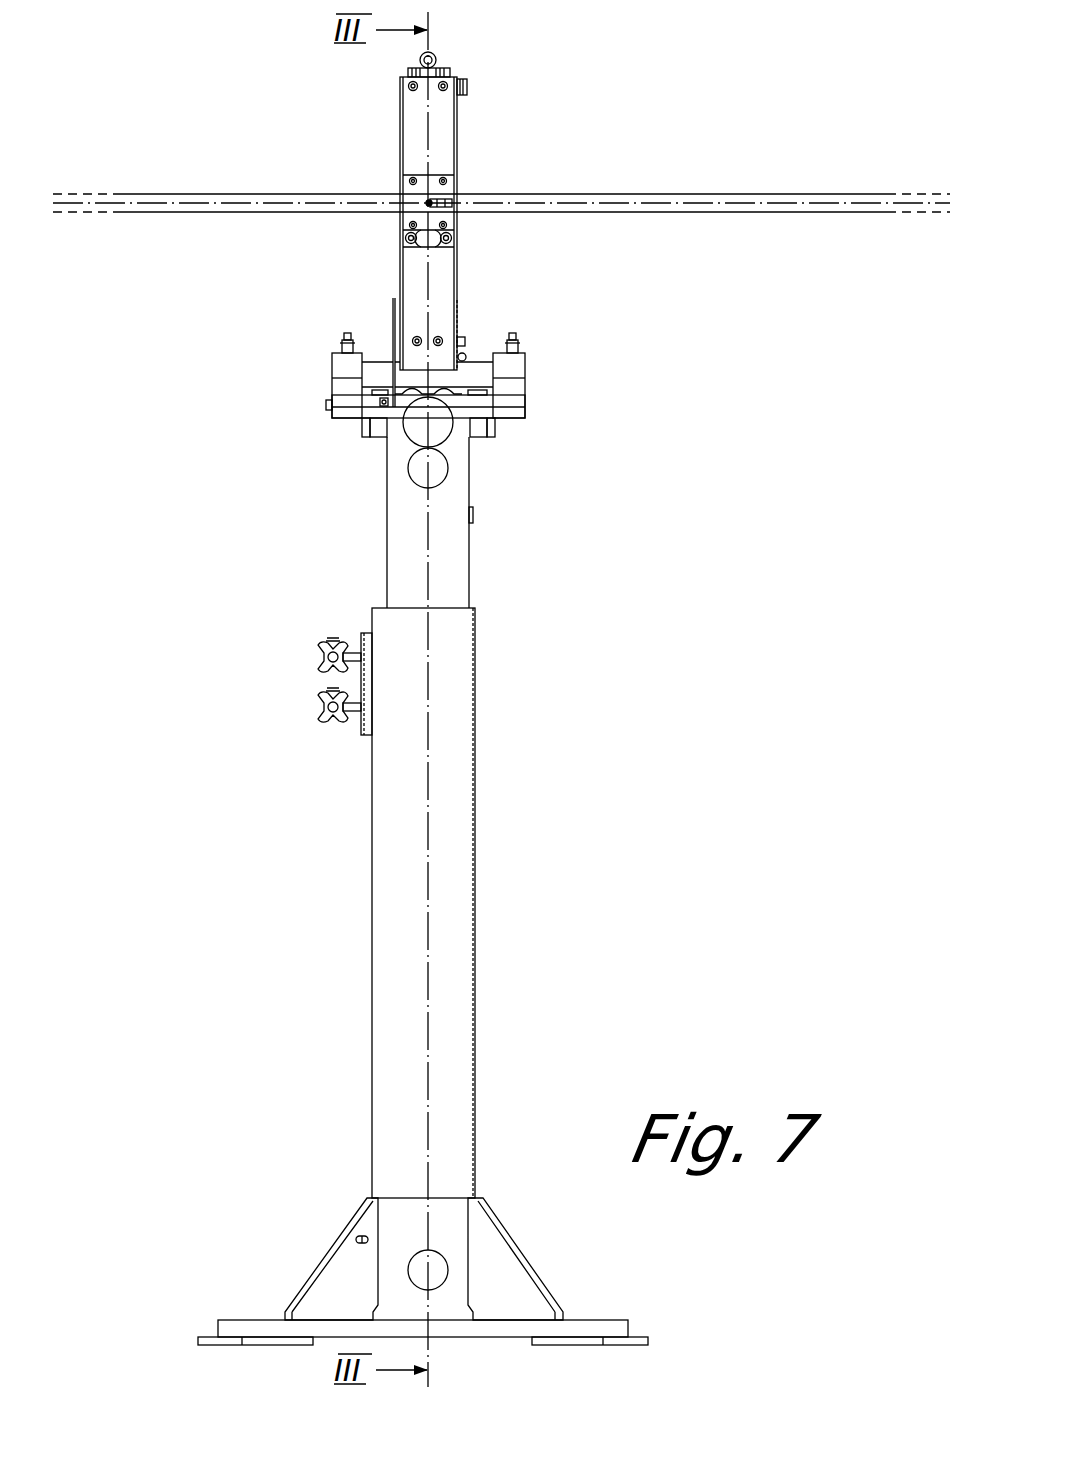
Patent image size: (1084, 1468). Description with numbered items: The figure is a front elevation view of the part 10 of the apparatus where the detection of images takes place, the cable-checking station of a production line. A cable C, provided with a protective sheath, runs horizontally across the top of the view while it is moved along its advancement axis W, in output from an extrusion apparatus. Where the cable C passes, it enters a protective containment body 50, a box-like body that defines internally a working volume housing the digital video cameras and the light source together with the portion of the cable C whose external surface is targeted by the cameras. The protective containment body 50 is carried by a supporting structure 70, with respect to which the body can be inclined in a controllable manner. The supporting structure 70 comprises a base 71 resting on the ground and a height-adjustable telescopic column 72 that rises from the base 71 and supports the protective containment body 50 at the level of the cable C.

The part of the apparatus 10 is at (176, 126).
The protective containment body 50 is at (398, 127).
The supporting structure 70 is at (477, 690).
The base 71 is at (258, 1329).
The height-adjustable telescopic column 72 is at (450, 886).
The cable C is at (656, 192).
The advancement axis W is at (908, 203).